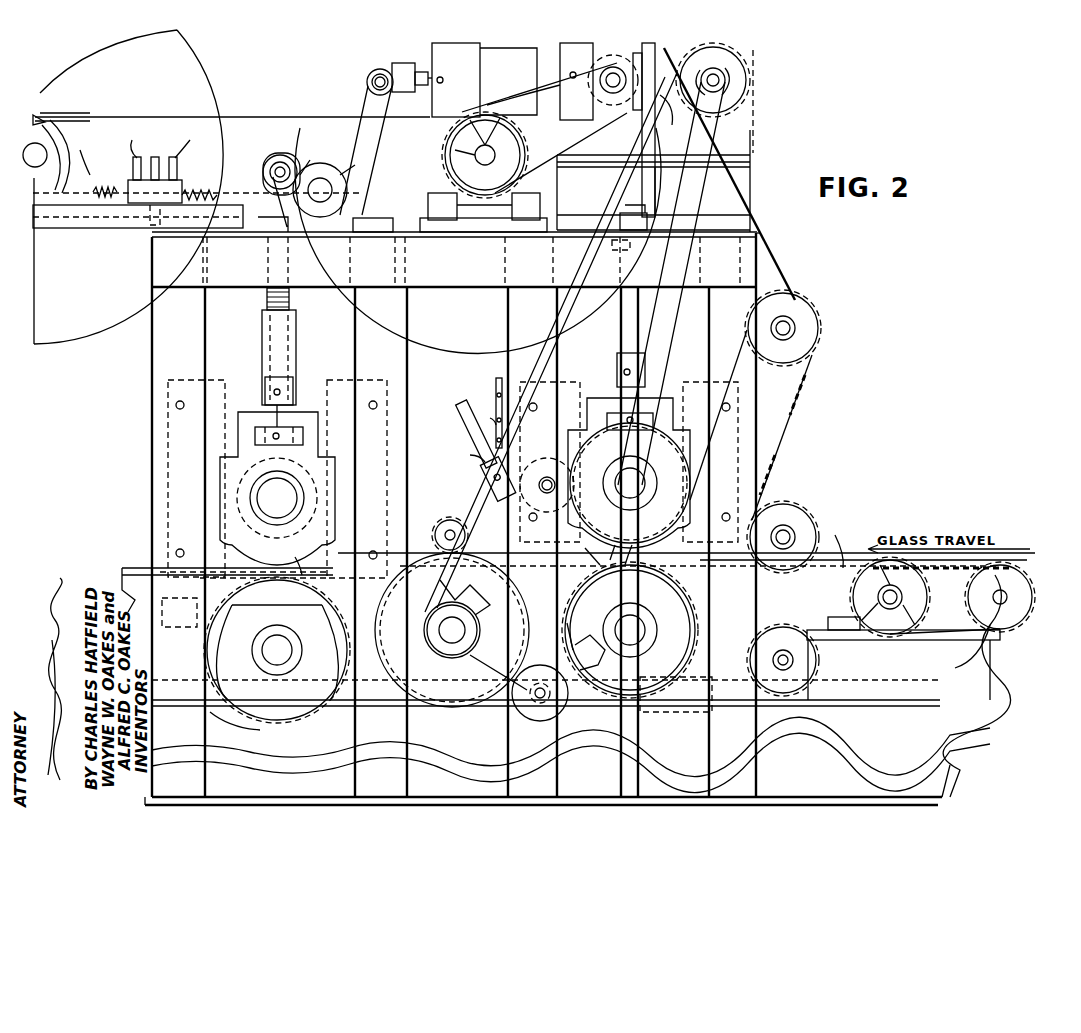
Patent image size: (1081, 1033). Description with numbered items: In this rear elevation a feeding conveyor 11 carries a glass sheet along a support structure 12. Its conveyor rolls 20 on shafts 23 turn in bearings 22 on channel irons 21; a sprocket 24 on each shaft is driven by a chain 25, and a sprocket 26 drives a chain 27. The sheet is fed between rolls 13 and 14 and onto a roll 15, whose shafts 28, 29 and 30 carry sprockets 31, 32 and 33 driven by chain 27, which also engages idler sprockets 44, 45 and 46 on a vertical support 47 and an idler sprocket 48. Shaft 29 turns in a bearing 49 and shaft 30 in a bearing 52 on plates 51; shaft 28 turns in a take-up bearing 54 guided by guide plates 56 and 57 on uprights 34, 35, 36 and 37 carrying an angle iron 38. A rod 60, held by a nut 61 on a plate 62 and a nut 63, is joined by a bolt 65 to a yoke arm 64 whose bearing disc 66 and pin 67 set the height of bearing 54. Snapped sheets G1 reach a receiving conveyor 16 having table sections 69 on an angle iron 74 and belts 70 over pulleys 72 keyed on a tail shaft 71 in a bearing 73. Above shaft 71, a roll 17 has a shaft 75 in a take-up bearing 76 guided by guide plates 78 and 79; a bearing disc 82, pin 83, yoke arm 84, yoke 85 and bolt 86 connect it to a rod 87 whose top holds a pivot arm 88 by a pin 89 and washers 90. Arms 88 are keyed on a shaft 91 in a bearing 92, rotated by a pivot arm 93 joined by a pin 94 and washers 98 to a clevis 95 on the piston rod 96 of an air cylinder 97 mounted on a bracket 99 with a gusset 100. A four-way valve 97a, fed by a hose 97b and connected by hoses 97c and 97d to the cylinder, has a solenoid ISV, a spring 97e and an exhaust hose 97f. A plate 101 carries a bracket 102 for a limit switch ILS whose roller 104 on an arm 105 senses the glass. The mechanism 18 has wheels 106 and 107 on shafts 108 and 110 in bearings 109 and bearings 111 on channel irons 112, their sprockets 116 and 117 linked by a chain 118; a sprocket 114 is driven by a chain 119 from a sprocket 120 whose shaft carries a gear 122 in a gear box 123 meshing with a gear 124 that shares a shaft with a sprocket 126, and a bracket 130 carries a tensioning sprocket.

The feeding conveyor 11 is at (1024, 543).
The support structure 12 is at (766, 252).
The roll 13 is at (672, 535).
The roll 14 is at (590, 585).
The roll 15 is at (406, 553).
The receiving conveyor 16 is at (140, 562).
The roll 17 is at (240, 497).
The mechanism 18 is at (755, 90).
The conveyor rolls 20 is at (975, 575).
The channel irons 21 is at (899, 670).
The bearings 22 is at (855, 632).
The shafts 23 is at (990, 598).
The sprocket 24 is at (970, 647).
The chain 25 is at (1003, 549).
The sprocket 26 is at (870, 585).
The chain 27 is at (780, 500).
The shaft 28 is at (630, 483).
The shaft 29 is at (630, 630).
The shaft 30 is at (462, 640).
The sprocket 31 is at (630, 525).
The sprocket 32 is at (605, 652).
The sprocket 33 is at (445, 605).
The upright 34 is at (174, 345).
The upright 35 is at (369, 330).
The upright 36 is at (524, 315).
The upright 37 is at (724, 320).
The angle iron 38 is at (236, 267).
The idler sprocket 44 is at (795, 330).
The idler sprocket 45 is at (795, 530).
The idler sprocket 46 is at (816, 675).
The vertical support 47 is at (815, 745).
The idler sprocket 48 is at (560, 712).
The bearing 49 is at (630, 630).
The plates 51 is at (692, 695).
The bearing 52 is at (452, 630).
The take-up bearing 54 is at (629, 473).
The guide plate 56 is at (578, 385).
The guide plate 57 is at (695, 382).
The rod 60 is at (621, 322).
The nut 61 is at (620, 218).
The plate 62 is at (550, 240).
The nut 63 is at (625, 245).
The yoke arm 64 is at (645, 385).
The bolt 65 is at (632, 372).
The take-up bearing disc 66 is at (640, 430).
The pin 67 is at (625, 410).
The table sections 69 is at (122, 566).
The belts 70 is at (222, 720).
The tail shaft 71 is at (277, 650).
The pulleys 72 is at (277, 646).
The bearing 73 is at (278, 652).
The transverse angle iron 74 is at (178, 622).
The shaft 75 is at (277, 498).
The take-up bearing 76 is at (238, 462).
The guide plate 78 is at (210, 382).
The guide plate 79 is at (338, 382).
The bearing discs 82 is at (300, 438).
The pins 83 is at (272, 434).
The yoke arms 84 is at (283, 410).
The yoke 85 is at (300, 330).
The bolt 86 is at (280, 392).
The rod 87 is at (267, 305).
The pivot arm 88 is at (280, 160).
The pin 89 is at (263, 172).
The washers 90 is at (268, 158).
The shaft 91 is at (326, 178).
The bearing 92 is at (345, 228).
The pivot arm 93 is at (375, 143).
The pin 94 is at (365, 88).
The clevis 95 is at (404, 63).
The piston rod 96 is at (418, 88).
The air cylinder 97 is at (508, 81).
The 4-way valve 97a is at (170, 203).
The hose 97b is at (143, 235).
The hose 97c is at (298, 100).
The hose 97d is at (384, 100).
The spring 97e is at (99, 158).
The exhaust hose 97f is at (155, 150).
The washers 98 is at (374, 78).
The bracket 99 is at (740, 215).
The gusset 100 is at (740, 180).
The plate 101 is at (500, 380).
The bracket 102 is at (474, 418).
The rollers 104 is at (445, 525).
The arms 105 is at (463, 508).
The wheel 106 is at (440, 343).
The wheel 107 is at (80, 335).
The shaft 108 is at (478, 165).
The bearings 109 is at (472, 232).
The shaft 110 is at (40, 167).
The bearings 111 is at (100, 180).
The channel irons 112 is at (97, 228).
The sprocket 114 is at (460, 157).
The sprocket 116 is at (523, 95).
The sprocket 117 is at (37, 113).
The chain 118 is at (75, 117).
The chain 119 is at (598, 128).
The sprocket 120 is at (640, 105).
The gear 122 is at (641, 103).
The gear box 123 is at (758, 120).
The gear 124 is at (740, 60).
The sprocket 126 is at (760, 72).
The bracket 130 is at (540, 492).
The solenoid ISV is at (200, 195).
The limit switch ILS is at (460, 455).
The smaller glass sheets G1 is at (570, 546).